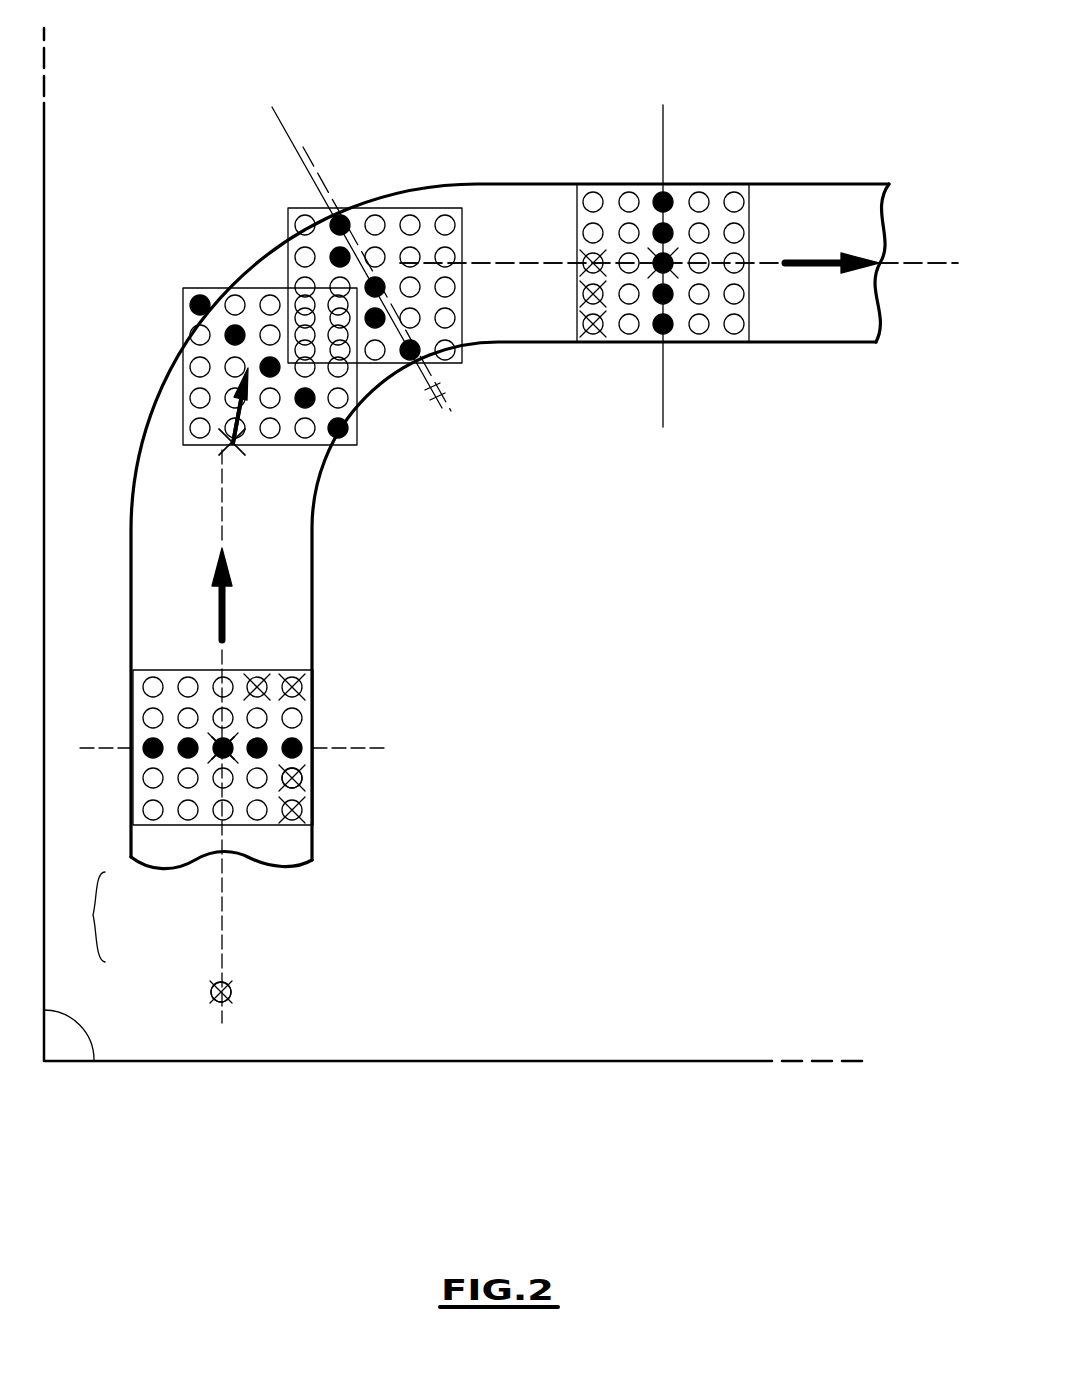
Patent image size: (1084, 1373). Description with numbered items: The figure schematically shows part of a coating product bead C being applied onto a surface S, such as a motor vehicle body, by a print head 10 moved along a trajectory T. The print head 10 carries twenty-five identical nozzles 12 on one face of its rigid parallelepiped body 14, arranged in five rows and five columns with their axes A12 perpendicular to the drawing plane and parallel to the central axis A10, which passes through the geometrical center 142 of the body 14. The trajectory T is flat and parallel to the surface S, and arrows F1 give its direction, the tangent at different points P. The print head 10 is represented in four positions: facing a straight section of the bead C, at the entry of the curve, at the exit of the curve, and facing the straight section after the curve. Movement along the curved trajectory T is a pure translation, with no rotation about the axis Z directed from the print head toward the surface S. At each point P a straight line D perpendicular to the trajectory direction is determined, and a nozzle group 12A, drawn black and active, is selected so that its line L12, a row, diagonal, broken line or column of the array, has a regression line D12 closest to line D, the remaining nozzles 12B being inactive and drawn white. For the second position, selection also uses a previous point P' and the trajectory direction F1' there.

The print head 10 is at (360, 178).
The nozzles 12 is at (82, 917).
The selected nozzle group 12A is at (378, 283).
The other nozzles 12B is at (190, 366).
The body 14 is at (297, 782).
The geometrical center 142 is at (226, 745).
The central axis of print head A10 is at (210, 745).
The central axis of nozzle A12 is at (259, 678).
The straight line perpendicular to trajectory direction D is at (195, 302).
The regression line D12 is at (250, 80).
The line of selected nozzles L12 is at (312, 204).
The trajectory direction arrows F1 is at (545, 430).
The trajectory direction at previous point F1' is at (162, 427).
The trajectory point P is at (288, 692).
The previous trajectory point P' is at (293, 479).
The coating product bead C is at (283, 553).
The trajectory T is at (937, 263).
The axis Z is at (232, 988).
The surface S is at (69, 1035).